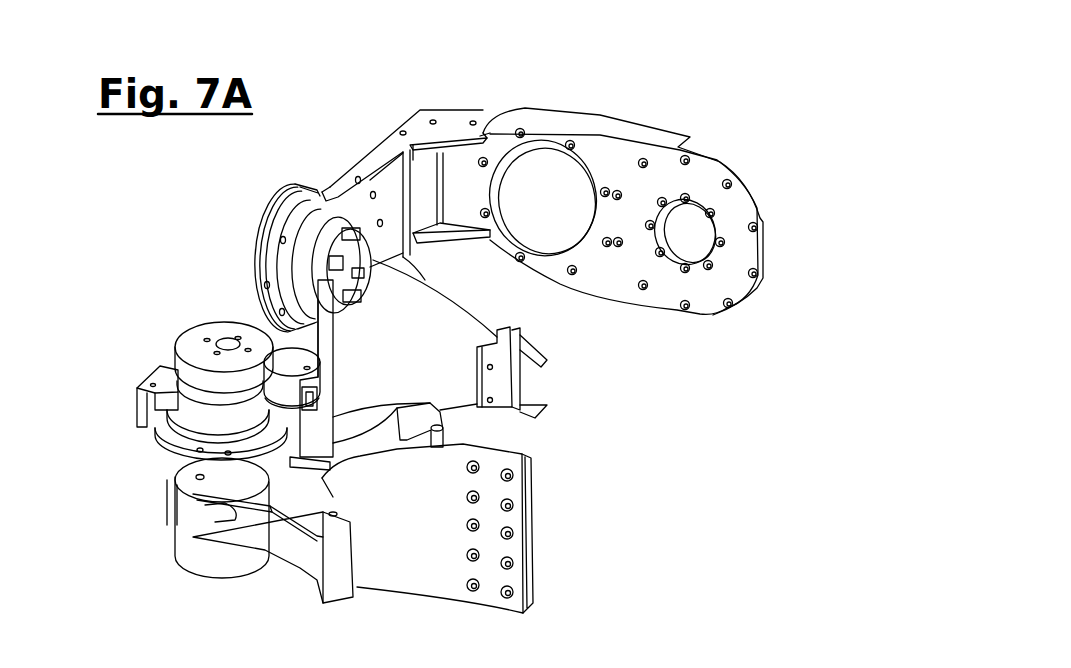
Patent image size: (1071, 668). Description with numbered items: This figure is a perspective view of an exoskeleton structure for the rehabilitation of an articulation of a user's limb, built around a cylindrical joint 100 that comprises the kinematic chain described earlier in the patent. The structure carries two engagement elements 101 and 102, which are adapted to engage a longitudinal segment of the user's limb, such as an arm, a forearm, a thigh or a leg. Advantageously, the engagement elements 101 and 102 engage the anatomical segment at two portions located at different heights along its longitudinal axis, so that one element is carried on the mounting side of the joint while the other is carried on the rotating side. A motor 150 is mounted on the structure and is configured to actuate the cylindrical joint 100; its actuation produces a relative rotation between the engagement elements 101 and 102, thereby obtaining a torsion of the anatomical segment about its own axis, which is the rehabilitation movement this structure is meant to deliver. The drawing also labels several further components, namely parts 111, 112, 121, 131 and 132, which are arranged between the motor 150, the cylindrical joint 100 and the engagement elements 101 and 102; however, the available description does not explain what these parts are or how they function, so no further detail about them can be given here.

The cylindrical joint 100 is at (664, 530).
The engagement element 101 is at (420, 552).
The engagement element 102 is at (433, 323).
The bracket 111 is at (243, 527).
The clamp 112 is at (527, 390).
The drive unit 121 is at (150, 361).
The boss 131 is at (443, 427).
The spindle flange 132 is at (300, 331).
The motor 150 is at (193, 340).